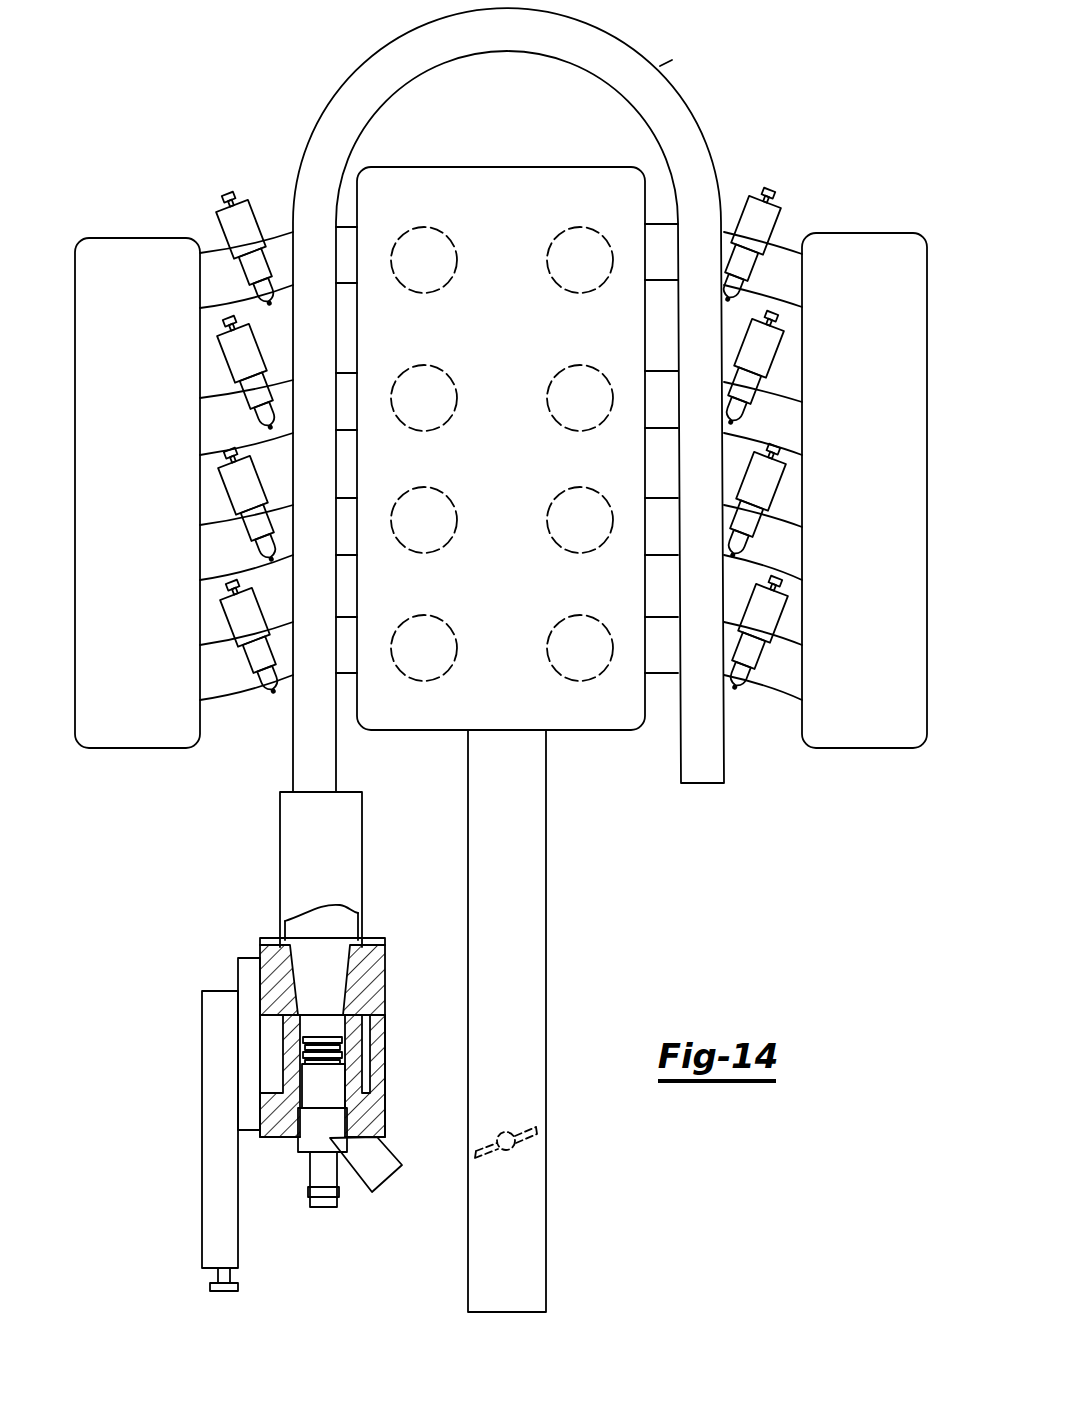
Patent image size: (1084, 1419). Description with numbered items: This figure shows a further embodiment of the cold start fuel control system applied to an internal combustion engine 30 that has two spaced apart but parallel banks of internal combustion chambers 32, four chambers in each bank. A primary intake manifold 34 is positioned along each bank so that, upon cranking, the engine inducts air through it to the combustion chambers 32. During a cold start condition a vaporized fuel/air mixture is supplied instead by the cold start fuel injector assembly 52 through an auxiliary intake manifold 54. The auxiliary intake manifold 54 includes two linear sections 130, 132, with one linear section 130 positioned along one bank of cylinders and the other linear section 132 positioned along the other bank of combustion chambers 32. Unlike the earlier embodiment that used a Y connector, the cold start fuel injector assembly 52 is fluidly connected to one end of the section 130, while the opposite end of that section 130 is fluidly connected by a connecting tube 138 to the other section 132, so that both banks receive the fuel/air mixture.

The internal combustion engine 30 is at (594, 731).
The internal combustion chambers 32 is at (455, 503).
The primary intake manifold 34 is at (170, 238).
The cold start fuel injector assembly 52 is at (184, 1037).
The auxiliary intake manifold 54 is at (306, 112).
The linear section 130 is at (293, 455).
The linear section 132 is at (725, 455).
The connecting tube 138 is at (672, 60).